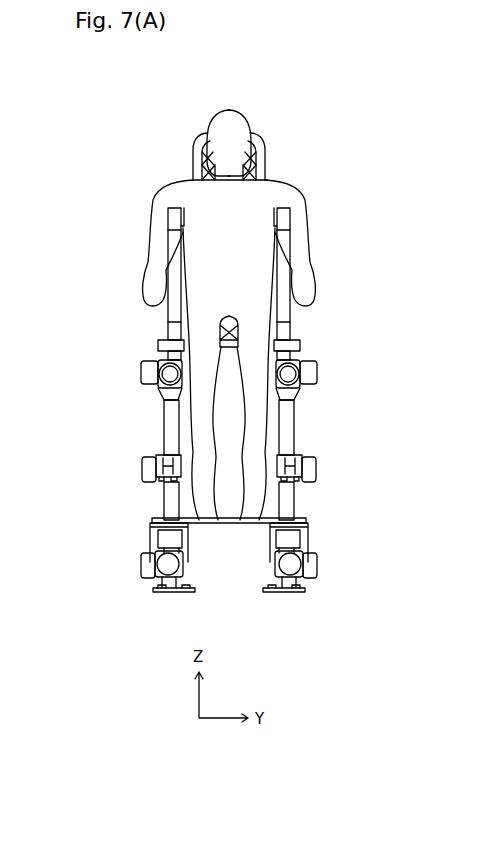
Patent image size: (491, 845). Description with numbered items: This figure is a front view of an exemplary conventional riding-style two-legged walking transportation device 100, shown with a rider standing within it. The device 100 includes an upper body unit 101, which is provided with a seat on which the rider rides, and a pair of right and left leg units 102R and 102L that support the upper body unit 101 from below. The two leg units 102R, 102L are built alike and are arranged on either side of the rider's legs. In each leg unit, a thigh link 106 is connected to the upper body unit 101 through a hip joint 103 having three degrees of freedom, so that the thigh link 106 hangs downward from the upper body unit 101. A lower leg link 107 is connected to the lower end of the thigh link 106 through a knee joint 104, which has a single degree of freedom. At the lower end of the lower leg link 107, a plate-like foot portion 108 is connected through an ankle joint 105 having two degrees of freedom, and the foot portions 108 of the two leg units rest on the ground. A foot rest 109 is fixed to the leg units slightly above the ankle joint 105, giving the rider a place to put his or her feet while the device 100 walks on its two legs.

The two-legged walking transportation device 100 is at (313, 88).
The upper body unit 101 is at (119, 309).
The right leg unit 102R is at (75, 352).
The left leg unit 102L is at (383, 352).
The hip joint 103 is at (132, 377).
The knee joint 104 is at (132, 472).
The ankle joint 105 is at (132, 570).
The thigh link 106 is at (164, 425).
The lower leg link 107 is at (164, 504).
The foot portion 108 is at (262, 590).
The foot rest 109 is at (215, 523).